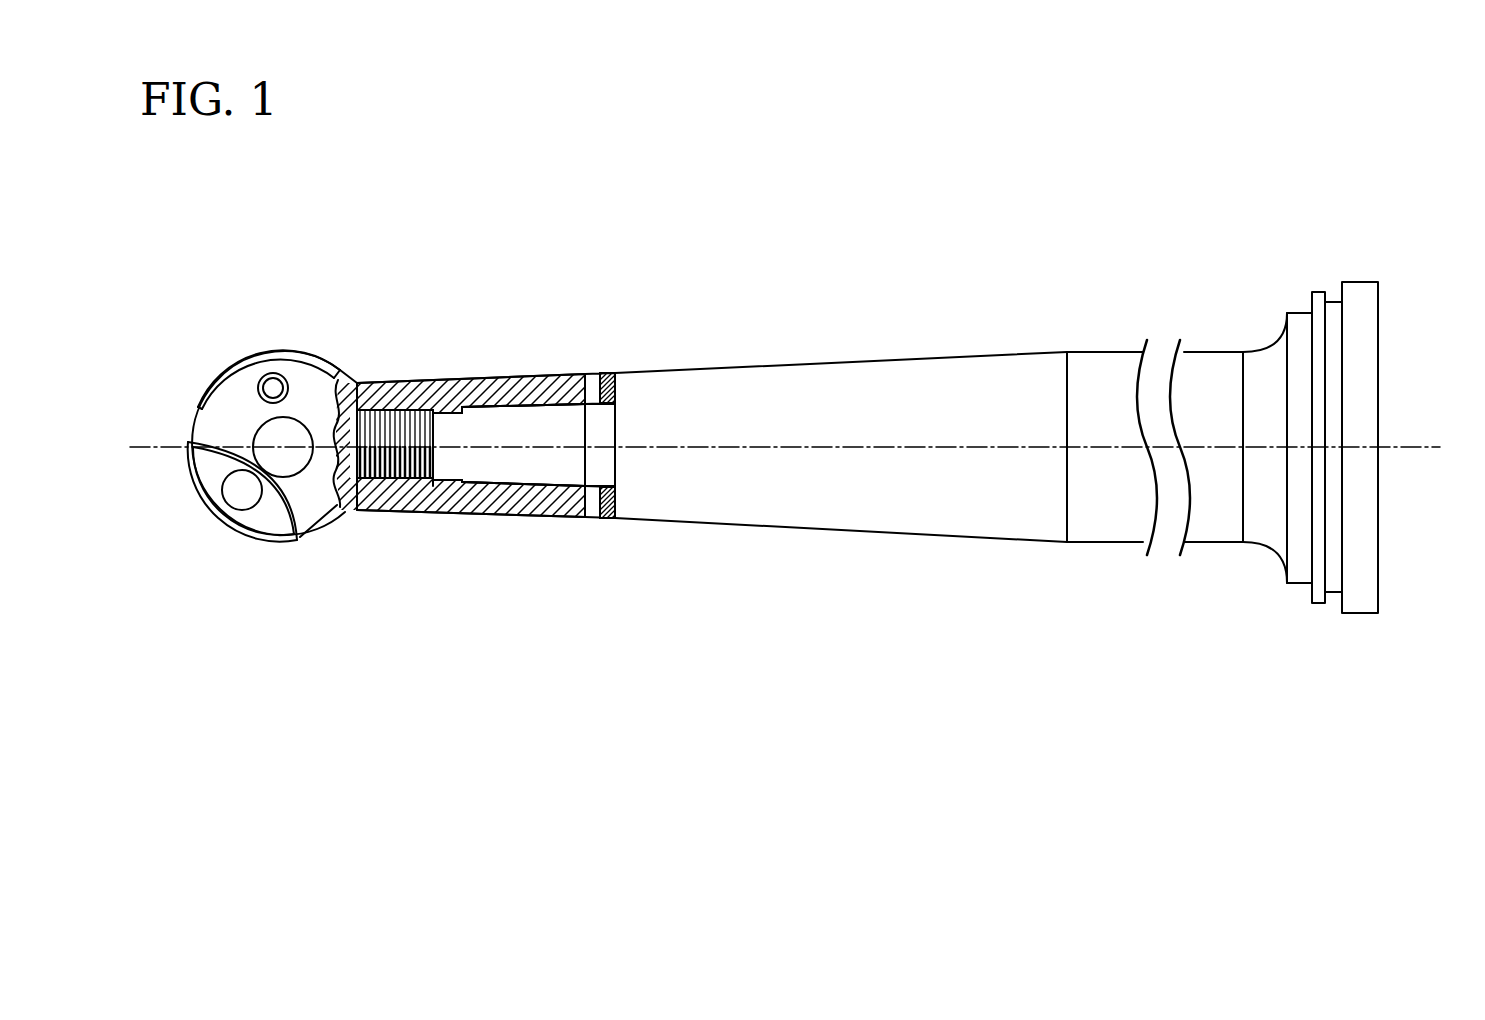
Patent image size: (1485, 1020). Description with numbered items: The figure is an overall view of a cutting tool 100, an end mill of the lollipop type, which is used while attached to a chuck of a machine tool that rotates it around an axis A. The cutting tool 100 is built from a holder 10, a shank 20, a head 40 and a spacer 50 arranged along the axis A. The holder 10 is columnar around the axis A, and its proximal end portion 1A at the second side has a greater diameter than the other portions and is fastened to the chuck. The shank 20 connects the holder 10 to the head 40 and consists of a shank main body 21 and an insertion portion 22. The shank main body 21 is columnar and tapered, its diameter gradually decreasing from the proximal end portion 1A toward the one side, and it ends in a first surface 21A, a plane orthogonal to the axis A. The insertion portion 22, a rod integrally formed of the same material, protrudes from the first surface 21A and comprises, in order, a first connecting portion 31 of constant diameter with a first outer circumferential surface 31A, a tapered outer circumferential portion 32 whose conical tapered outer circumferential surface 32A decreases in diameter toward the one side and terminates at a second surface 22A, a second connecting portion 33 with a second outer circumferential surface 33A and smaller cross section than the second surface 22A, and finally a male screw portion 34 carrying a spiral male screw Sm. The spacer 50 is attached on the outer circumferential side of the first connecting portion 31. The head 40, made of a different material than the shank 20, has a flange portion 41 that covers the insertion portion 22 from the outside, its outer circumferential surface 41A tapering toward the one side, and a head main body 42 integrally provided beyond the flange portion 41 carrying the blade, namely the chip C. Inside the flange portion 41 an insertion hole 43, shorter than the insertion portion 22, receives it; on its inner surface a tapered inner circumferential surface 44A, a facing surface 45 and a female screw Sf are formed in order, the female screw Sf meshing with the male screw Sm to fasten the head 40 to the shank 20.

The cutting tool 100 is at (1254, 192).
The proximal end portion 1A is at (1360, 282).
The holder 10 is at (1091, 368).
The shank 20 is at (813, 354).
The shank main body 21 is at (927, 373).
The first surface 21A is at (605, 512).
The insertion portion 22 is at (440, 490).
The second surface 22A is at (468, 460).
The first connecting portion 31 is at (602, 467).
The first outer circumferential surface 31A is at (601, 400).
The tapered outer circumferential portion 32 is at (521, 462).
The tapered outer circumferential surface 32A is at (545, 403).
The second connecting portion 33 is at (455, 428).
The second outer circumferential surface 33A is at (443, 387).
The male screw portion 34 is at (373, 475).
The head 40 is at (358, 256).
The flange portion 41 is at (580, 505).
The outer circumferential surface of the flange portion 41A is at (397, 513).
The head main body 42 is at (220, 559).
The insertion hole 43 is at (572, 413).
The tapered inner circumferential surface 44A is at (578, 487).
The facing surface 45 is at (442, 478).
The spacer 50 is at (608, 380).
The axis A is at (1420, 442).
The chip C is at (240, 366).
The male screw Sm is at (372, 403).
The female screw Sf is at (396, 416).